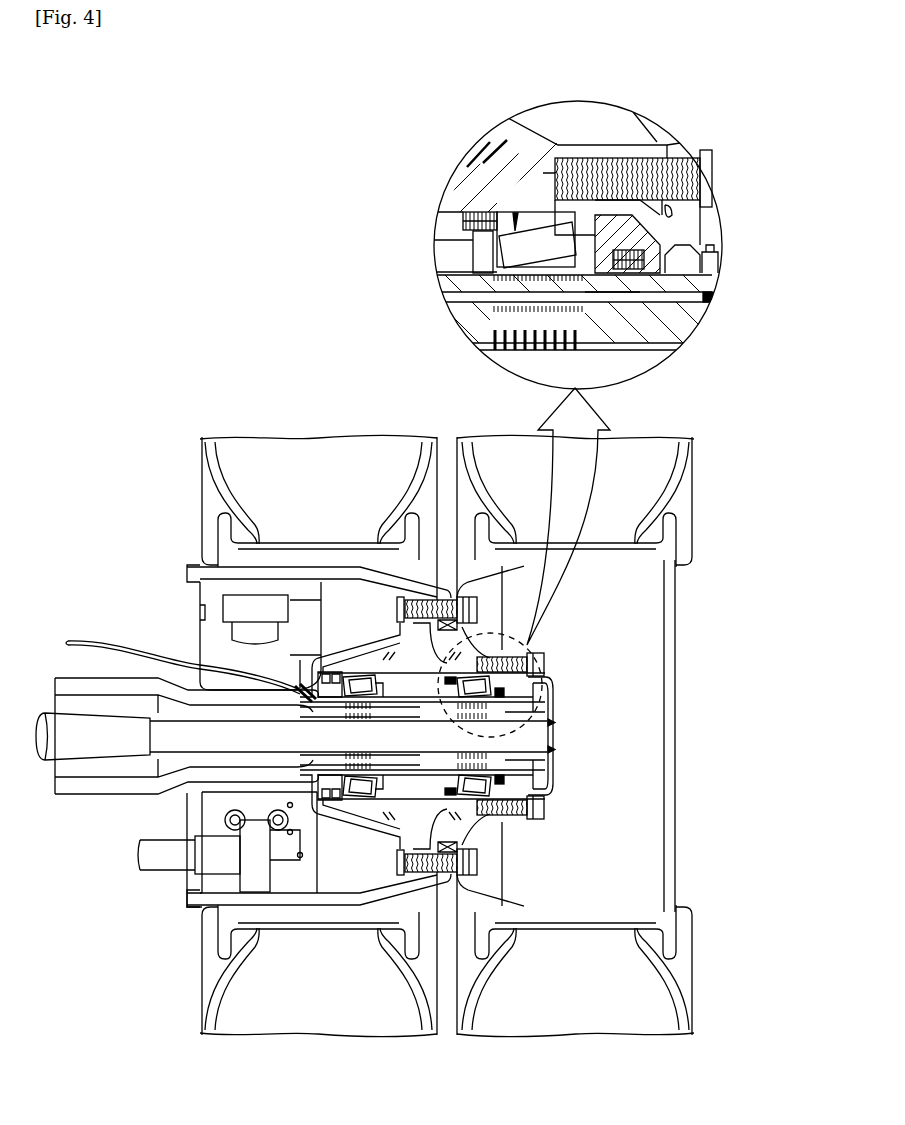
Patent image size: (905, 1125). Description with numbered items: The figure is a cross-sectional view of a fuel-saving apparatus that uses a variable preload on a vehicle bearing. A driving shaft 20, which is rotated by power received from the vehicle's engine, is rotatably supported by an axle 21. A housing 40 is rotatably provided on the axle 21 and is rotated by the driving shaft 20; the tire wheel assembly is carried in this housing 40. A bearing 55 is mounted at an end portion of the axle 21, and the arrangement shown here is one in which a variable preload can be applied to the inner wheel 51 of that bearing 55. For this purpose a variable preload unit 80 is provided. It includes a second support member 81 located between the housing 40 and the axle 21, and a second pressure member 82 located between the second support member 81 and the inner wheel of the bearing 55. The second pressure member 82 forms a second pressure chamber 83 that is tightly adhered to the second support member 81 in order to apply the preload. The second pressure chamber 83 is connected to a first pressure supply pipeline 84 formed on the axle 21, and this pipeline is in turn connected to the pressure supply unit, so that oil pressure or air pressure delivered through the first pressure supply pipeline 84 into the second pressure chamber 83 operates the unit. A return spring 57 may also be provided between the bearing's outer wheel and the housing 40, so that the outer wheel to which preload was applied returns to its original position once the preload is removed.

The driving shaft 20 is at (125, 752).
The axle 21 is at (82, 790).
The housing 40 is at (410, 655).
The inner wheel 51 is at (578, 263).
The bearing 55 is at (515, 213).
The return spring 57 is at (473, 213).
The variable preload unit 80 is at (525, 712).
The second support member 81 is at (665, 210).
The second pressure member 82 is at (604, 227).
The second pressure chamber 83 is at (644, 257).
The first pressure supply pipeline 84 is at (605, 300).